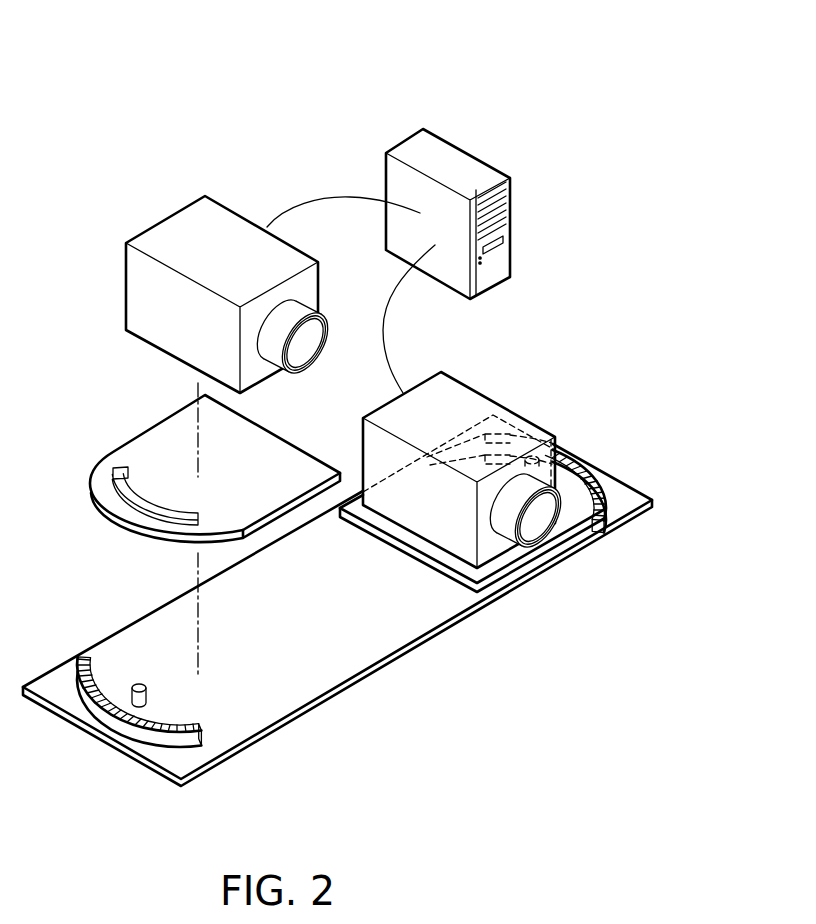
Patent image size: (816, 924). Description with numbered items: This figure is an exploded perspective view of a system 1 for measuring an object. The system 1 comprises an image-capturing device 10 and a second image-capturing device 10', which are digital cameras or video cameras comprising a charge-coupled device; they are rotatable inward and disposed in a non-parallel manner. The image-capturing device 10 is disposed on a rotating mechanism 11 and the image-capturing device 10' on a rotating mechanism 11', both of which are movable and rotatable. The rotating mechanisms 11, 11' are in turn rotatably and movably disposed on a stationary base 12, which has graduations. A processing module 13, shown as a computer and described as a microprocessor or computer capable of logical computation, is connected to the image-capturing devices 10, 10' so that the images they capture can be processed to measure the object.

The system for measuring an object 1 is at (162, 78).
The image-capturing device 10 is at (208, 282).
The image-capturing device 10' is at (466, 452).
The rotating mechanism 11 is at (186, 468).
The rotating mechanism 11' is at (524, 490).
The stationary base 12 is at (622, 505).
The processing module 13 is at (457, 162).